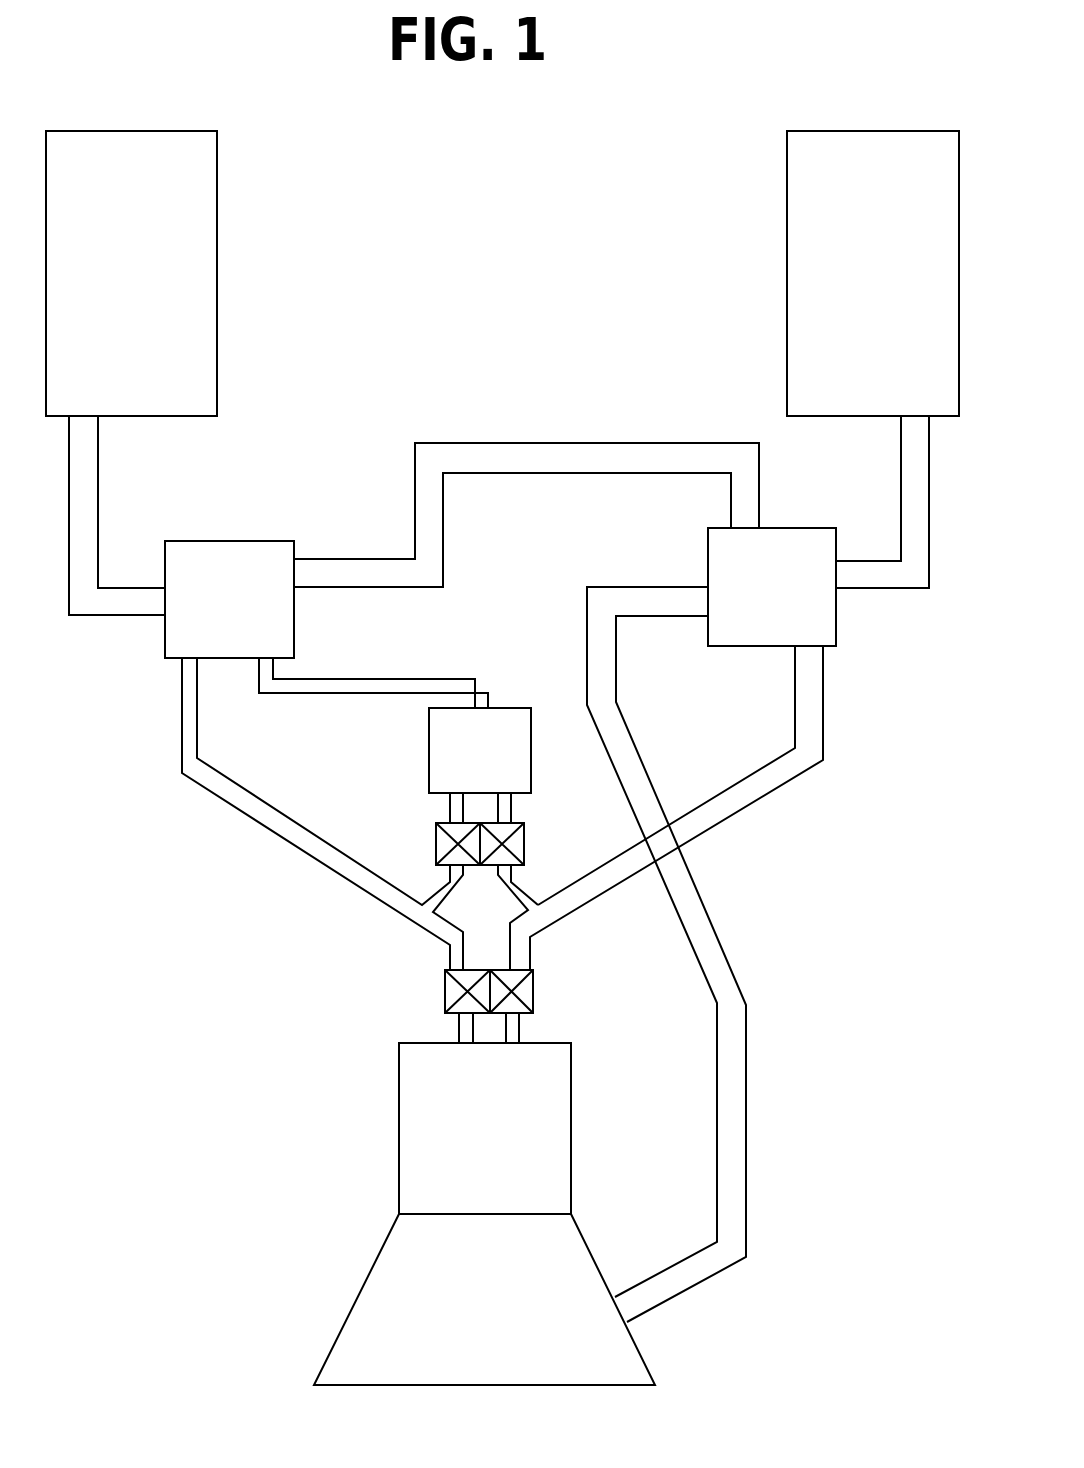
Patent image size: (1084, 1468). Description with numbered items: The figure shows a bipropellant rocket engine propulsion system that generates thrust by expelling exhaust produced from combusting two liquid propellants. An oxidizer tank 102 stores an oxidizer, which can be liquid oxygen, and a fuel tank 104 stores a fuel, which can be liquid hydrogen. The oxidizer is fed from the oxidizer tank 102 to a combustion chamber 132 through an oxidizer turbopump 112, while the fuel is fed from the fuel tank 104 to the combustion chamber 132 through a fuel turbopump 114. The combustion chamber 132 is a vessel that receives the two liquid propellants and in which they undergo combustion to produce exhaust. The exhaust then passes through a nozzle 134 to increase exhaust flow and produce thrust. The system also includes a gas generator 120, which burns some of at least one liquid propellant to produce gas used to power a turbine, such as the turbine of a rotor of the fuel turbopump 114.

The oxidizer tank 102 is at (111, 286).
The fuel tank 104 is at (853, 286).
The oxidizer turbopump 112 is at (209, 611).
The fuel turbopump 114 is at (751, 599).
The gas generator 120 is at (460, 761).
The combustion chamber 132 is at (462, 1139).
The nozzle 134 is at (463, 1322).